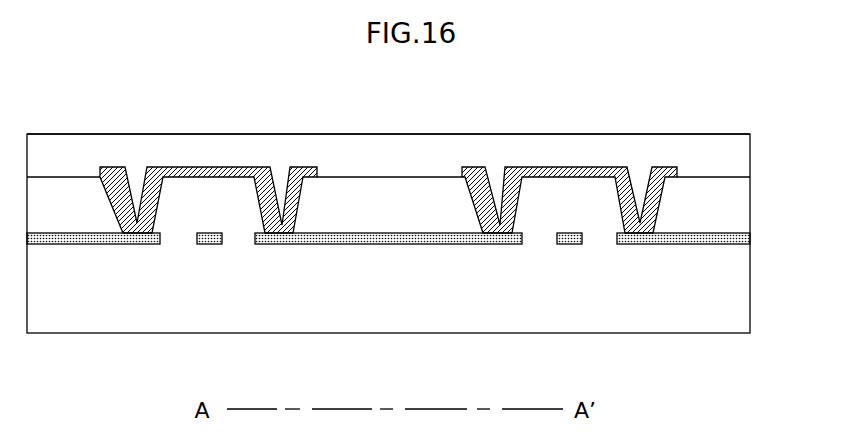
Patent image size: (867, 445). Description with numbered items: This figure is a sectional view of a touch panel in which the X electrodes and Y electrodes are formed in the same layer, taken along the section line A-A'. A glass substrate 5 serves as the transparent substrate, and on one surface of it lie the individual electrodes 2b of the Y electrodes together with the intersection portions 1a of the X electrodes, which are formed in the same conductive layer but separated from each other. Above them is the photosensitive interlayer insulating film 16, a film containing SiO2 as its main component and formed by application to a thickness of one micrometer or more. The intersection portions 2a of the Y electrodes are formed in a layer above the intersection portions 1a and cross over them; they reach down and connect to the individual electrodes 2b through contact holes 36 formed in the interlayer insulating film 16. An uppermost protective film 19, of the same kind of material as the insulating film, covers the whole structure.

The glass substrate 5 is at (640, 322).
The uppermost protective film 19 is at (738, 153).
The interlayer insulating film 16 is at (738, 198).
The individual electrodes of the Y electrodes 2b is at (100, 244).
The intersection portions of the X electrodes 1a is at (207, 247).
The contact holes 36 is at (130, 167).
The intersection portions of the Y electrodes 2a is at (185, 167).